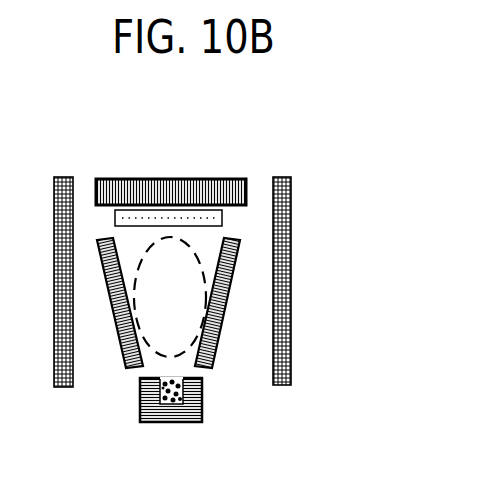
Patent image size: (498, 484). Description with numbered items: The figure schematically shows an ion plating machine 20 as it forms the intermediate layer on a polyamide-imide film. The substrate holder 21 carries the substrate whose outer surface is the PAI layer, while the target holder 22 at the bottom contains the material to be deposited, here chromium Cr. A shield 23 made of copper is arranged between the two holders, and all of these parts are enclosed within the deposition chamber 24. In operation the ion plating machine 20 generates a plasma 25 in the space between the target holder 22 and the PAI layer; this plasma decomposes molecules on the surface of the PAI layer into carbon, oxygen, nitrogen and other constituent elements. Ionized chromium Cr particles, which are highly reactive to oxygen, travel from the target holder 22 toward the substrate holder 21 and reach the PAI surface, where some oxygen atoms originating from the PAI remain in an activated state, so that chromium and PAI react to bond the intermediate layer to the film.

The ion plating machine 20 is at (287, 148).
The substrate holder 21 is at (222, 179).
The PAI layer PAI is at (212, 229).
The shield 23 is at (225, 333).
The deposition chamber 24 is at (290, 357).
The plasma region 25 is at (188, 362).
The target holder 22 is at (152, 421).
The chromium Cr is at (158, 390).